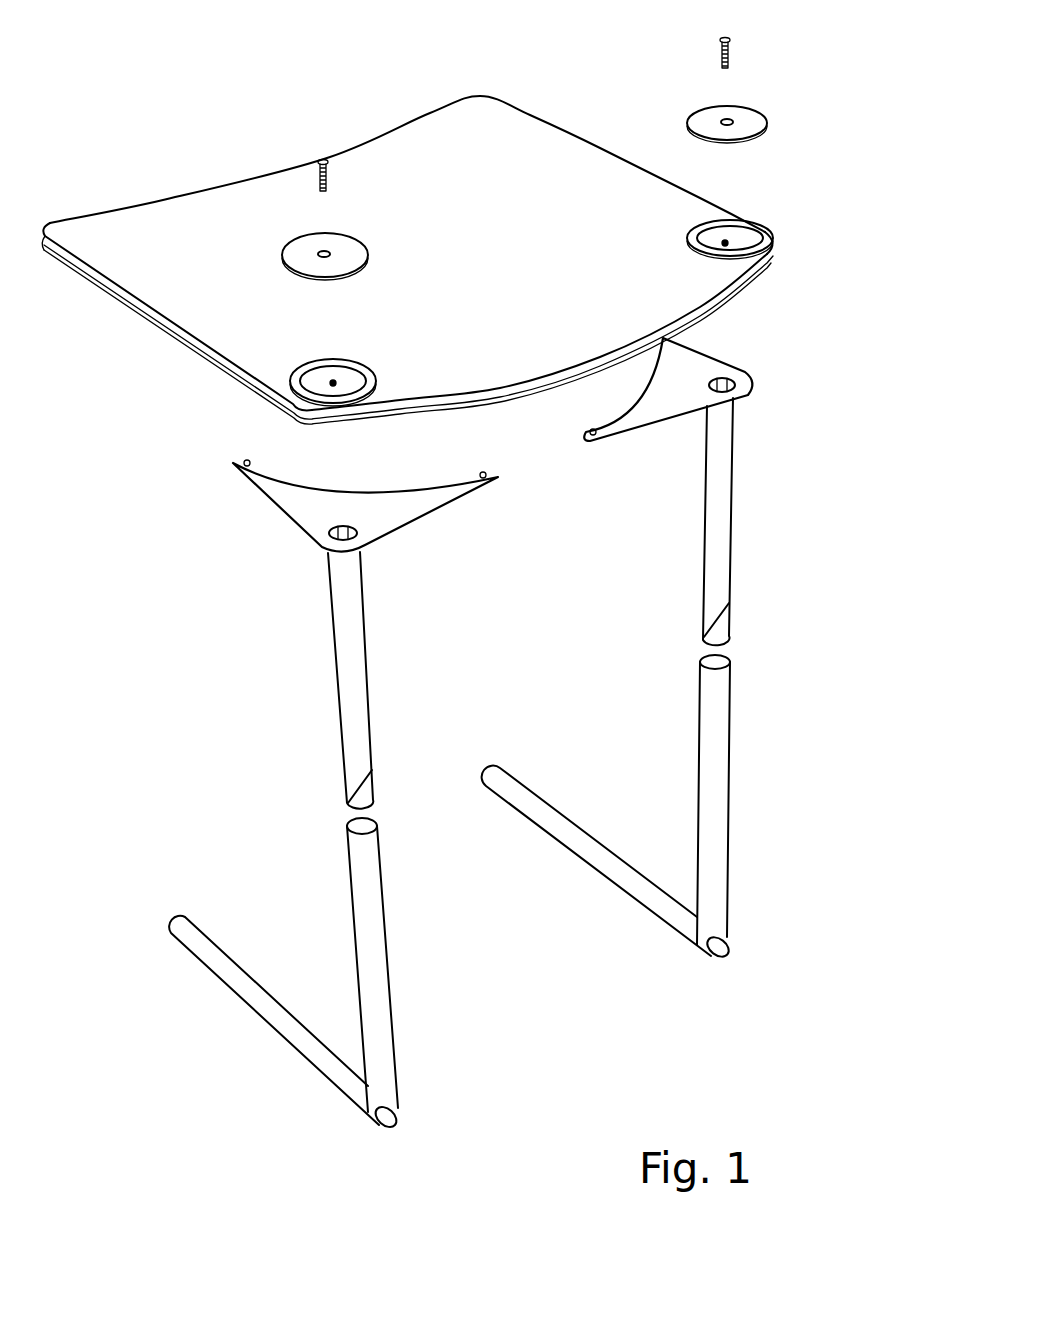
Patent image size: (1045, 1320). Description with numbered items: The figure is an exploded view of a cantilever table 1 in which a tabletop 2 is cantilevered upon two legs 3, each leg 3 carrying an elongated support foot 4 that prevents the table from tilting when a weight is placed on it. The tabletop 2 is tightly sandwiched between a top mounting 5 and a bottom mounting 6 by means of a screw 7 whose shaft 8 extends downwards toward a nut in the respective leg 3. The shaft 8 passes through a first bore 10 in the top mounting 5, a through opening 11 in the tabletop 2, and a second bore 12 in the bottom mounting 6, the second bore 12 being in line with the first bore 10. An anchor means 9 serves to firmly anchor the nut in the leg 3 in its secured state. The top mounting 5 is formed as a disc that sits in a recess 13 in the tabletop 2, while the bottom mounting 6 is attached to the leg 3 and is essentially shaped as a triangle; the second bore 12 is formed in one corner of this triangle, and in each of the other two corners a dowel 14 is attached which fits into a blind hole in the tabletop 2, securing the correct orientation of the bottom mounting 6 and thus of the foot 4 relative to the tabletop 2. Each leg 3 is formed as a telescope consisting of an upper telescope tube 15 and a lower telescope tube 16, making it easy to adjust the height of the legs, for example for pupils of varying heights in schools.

The cantilever table 1 is at (262, 656).
The tabletop 2 is at (158, 200).
The leg 3 is at (362, 655).
The elongated support foot 4 is at (203, 935).
The top mounting 5 is at (348, 246).
The bottom mounting 6 is at (397, 518).
The screw 7 is at (322, 162).
The shaft 8 is at (330, 181).
The anchor means 9 is at (377, 791).
The first bore 10 is at (322, 250).
The through opening 11 is at (337, 381).
The second bore 12 is at (333, 548).
The recess 13 is at (315, 378).
The dowel 14 is at (247, 462).
The upper telescope tube 15 is at (348, 692).
The lower telescope tube 16 is at (387, 947).